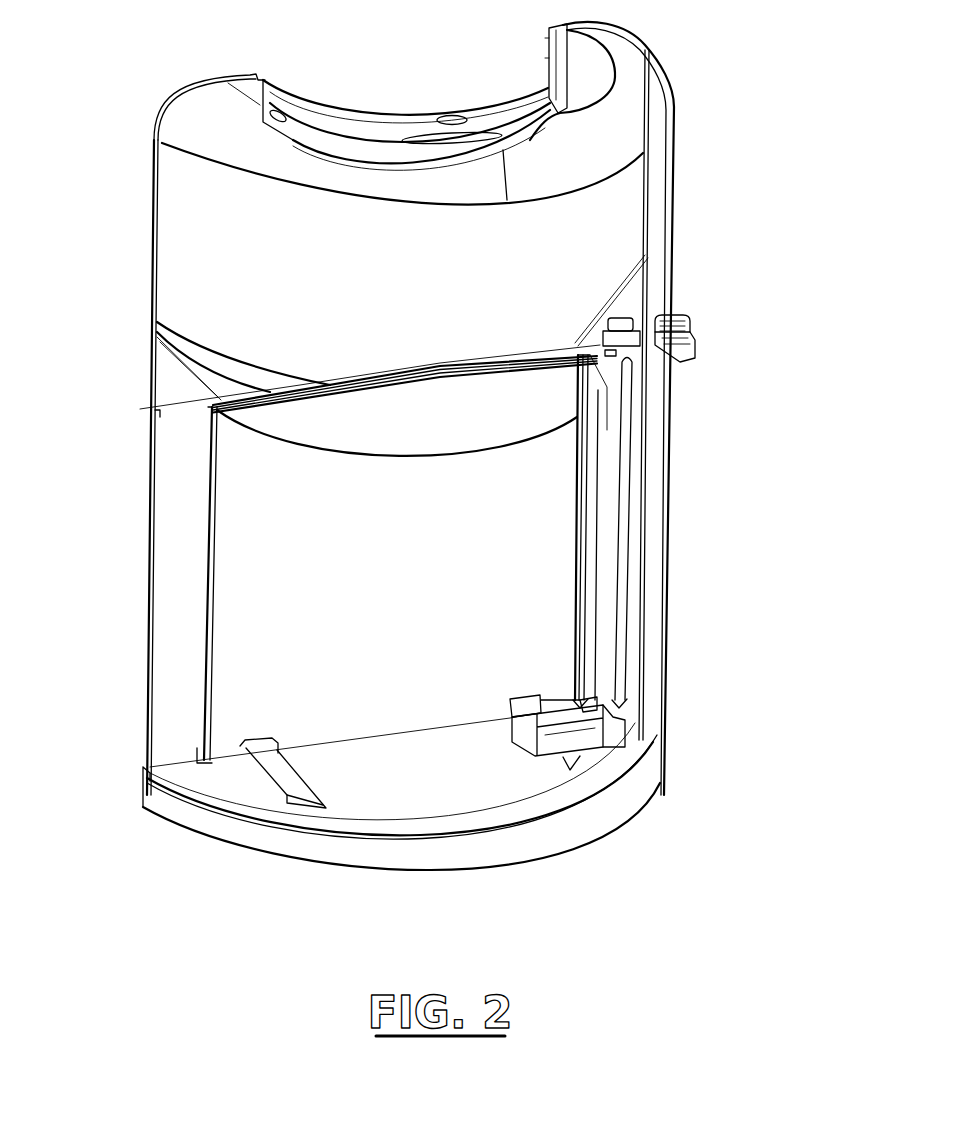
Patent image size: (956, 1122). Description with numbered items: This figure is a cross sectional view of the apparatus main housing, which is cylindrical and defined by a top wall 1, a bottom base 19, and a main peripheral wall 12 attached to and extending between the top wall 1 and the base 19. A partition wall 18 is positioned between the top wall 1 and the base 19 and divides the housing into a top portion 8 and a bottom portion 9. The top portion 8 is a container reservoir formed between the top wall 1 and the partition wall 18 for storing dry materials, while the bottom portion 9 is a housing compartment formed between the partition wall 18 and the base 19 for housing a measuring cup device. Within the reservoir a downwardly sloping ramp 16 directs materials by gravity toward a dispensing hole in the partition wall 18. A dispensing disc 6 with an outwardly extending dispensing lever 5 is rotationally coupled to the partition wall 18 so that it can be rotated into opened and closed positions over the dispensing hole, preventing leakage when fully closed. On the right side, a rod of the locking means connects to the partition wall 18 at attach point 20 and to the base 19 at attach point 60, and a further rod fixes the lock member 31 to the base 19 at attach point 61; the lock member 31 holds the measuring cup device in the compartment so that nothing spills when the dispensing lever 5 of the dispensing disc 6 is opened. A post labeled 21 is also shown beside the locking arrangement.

The top wall 1 is at (228, 78).
The dispensing lever 5 is at (647, 347).
The dispensing disc 6 is at (400, 422).
The top portion 8 is at (185, 221).
The bottom portion 9 is at (175, 623).
The main peripheral wall 12 is at (153, 279).
The downwardly sloping ramp 16 is at (228, 385).
The partition wall 18 is at (155, 410).
The bottom base 19 is at (148, 764).
The attach point 20 is at (603, 346).
The post 21 is at (640, 367).
The lock member 31 is at (527, 730).
The attach point 60 is at (627, 723).
The attach point 61 is at (600, 703).